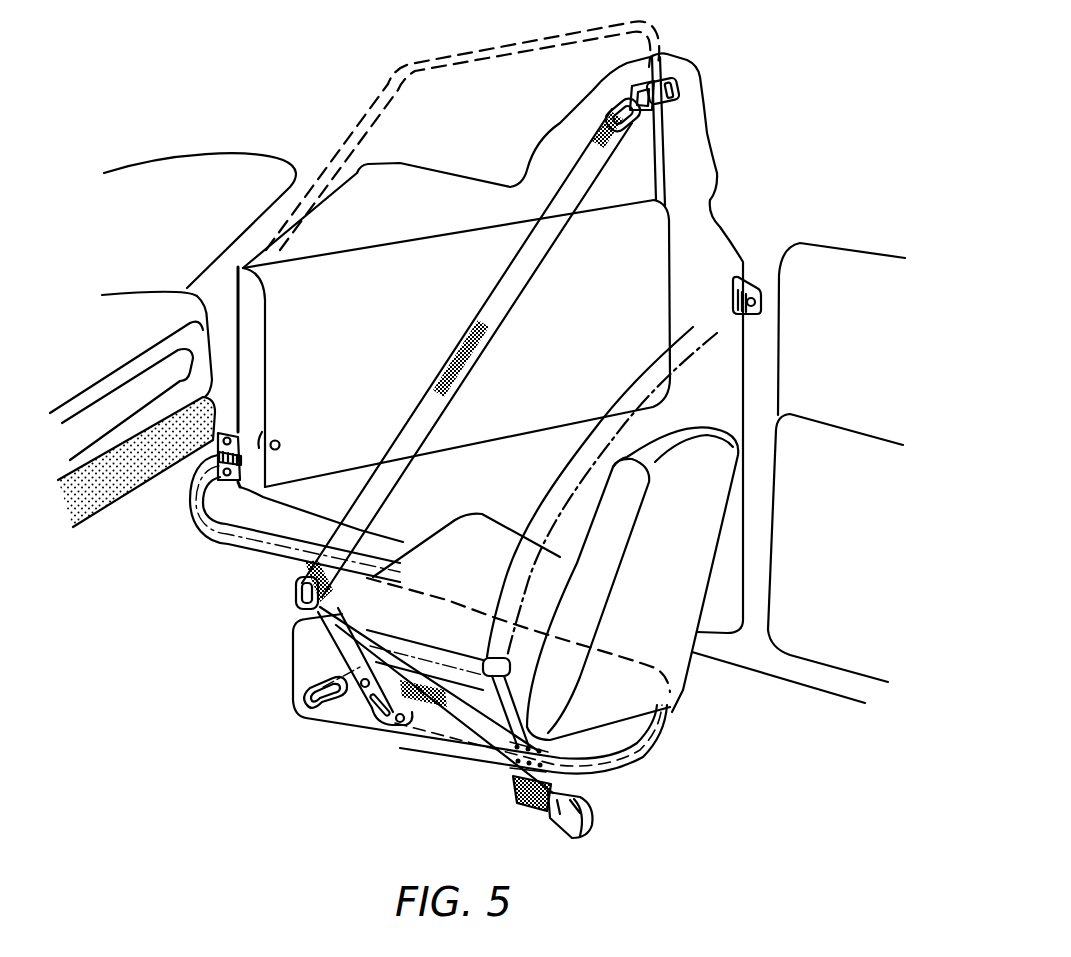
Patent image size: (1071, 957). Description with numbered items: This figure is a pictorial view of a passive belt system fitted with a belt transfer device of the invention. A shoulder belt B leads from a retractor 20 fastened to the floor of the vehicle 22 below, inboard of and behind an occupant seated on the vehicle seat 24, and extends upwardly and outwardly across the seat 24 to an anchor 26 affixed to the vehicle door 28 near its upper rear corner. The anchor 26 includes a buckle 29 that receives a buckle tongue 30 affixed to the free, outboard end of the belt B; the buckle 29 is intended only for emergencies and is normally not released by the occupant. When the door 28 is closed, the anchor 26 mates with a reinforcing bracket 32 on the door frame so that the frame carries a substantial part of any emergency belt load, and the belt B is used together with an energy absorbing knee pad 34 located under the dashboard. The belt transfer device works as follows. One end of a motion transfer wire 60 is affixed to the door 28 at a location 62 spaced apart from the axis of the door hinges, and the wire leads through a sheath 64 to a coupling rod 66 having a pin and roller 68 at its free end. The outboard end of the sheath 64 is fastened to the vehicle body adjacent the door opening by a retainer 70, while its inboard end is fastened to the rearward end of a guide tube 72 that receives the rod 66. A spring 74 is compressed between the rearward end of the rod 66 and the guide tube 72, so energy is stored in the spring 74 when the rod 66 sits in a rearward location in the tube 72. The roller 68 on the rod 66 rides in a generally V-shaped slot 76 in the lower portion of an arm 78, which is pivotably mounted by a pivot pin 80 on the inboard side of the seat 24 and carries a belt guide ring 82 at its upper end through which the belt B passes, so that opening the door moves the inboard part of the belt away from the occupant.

The retractor 20 is at (597, 810).
The vehicle 22 is at (858, 551).
The vehicle seat 24 is at (678, 591).
The anchor 26 is at (676, 77).
The vehicle door 28 is at (590, 371).
The buckle 29 is at (634, 80).
The buckle tongue 30 is at (607, 100).
The reinforcing bracket 32 is at (745, 285).
The energy absorbing knee pad 34 is at (105, 513).
The motion transfer wire 60 is at (263, 434).
The location 62 is at (280, 445).
The sheath 64 is at (230, 546).
The coupling rod 66 is at (466, 762).
The pin and roller 68 is at (401, 724).
The retainer 70 is at (235, 432).
The guide tube 72 is at (547, 747).
The spring 74 is at (517, 786).
The V-shaped slot 76 is at (372, 717).
The arm 78 is at (348, 650).
The pivot pin 80 is at (362, 690).
The belt guide ring 82 is at (296, 582).
The shoulder belt B is at (522, 289).